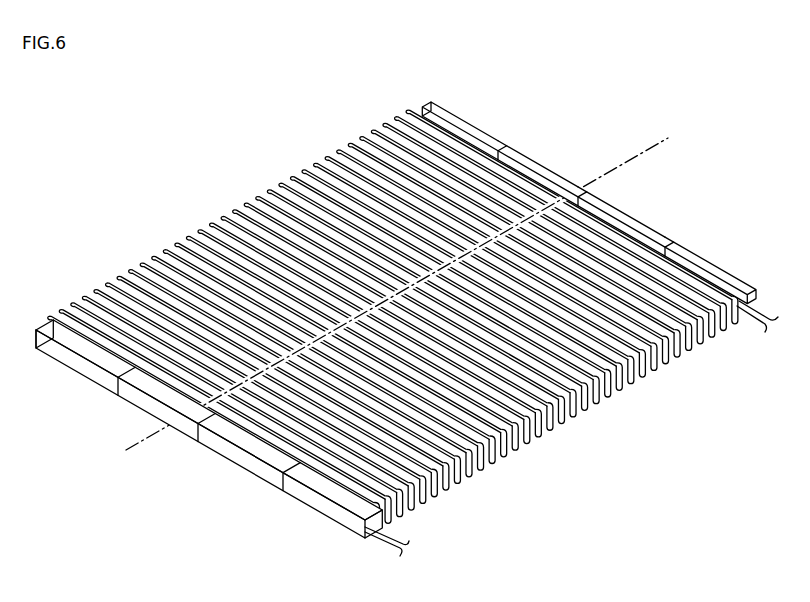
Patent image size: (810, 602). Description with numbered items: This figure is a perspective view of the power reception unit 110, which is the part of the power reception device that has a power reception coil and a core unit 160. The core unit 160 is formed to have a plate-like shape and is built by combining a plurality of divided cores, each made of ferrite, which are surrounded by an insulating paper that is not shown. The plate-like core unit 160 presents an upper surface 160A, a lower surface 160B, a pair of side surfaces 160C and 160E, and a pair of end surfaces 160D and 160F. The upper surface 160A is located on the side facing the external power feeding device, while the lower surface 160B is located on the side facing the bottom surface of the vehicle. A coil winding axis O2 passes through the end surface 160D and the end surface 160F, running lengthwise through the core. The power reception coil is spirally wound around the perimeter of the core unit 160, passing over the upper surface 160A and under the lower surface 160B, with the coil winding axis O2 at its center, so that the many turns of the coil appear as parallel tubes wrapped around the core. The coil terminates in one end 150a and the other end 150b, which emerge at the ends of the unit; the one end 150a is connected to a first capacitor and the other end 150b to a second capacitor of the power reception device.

The power reception unit 110 is at (416, 327).
The one end of power reception coil 150a is at (756, 299).
The other end of power reception coil 150b is at (393, 531).
The core unit 160 is at (572, 181).
The upper surface 160A is at (532, 163).
The lower surface 160B is at (338, 517).
The side surface 160C is at (624, 383).
The end surface 160D is at (290, 485).
The side surface 160E is at (412, 96).
The end surface 160F is at (617, 206).
The coil winding axis O2 is at (663, 136).